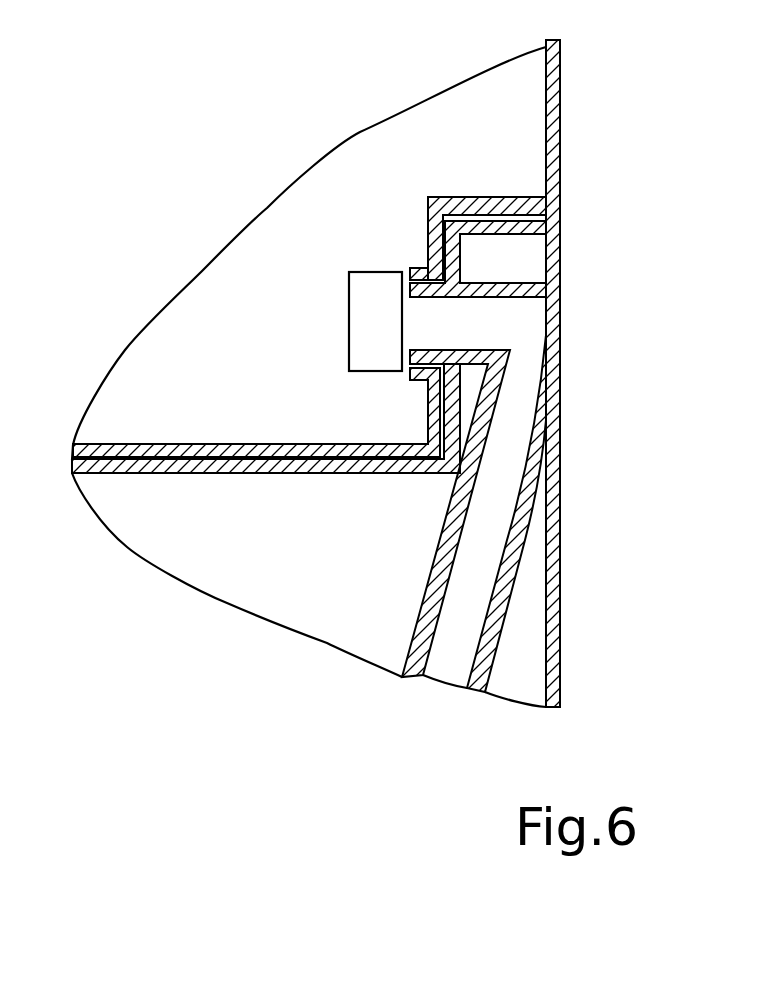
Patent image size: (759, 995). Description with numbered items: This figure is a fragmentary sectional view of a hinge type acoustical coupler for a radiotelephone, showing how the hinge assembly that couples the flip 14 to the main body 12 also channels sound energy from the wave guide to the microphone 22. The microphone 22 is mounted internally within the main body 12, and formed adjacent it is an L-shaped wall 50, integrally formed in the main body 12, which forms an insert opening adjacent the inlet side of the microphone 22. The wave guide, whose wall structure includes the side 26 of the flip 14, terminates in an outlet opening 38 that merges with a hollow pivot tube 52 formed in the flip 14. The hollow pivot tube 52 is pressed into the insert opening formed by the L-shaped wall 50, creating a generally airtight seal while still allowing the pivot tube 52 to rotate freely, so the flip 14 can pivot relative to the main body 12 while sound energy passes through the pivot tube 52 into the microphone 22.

The main body 12 is at (622, 164).
The flip 14 is at (606, 583).
The microphone 22 is at (366, 317).
The side 26 is at (288, 598).
The outlet opening 38 is at (500, 473).
The L-shaped wall 50 is at (420, 270).
The hollow pivot tube 52 is at (503, 325).